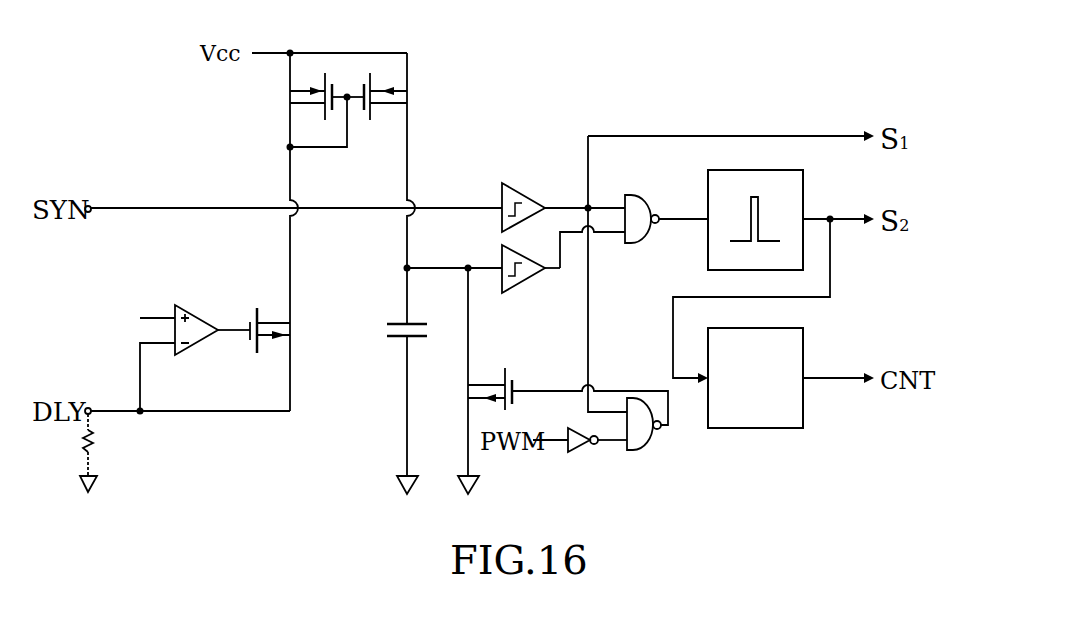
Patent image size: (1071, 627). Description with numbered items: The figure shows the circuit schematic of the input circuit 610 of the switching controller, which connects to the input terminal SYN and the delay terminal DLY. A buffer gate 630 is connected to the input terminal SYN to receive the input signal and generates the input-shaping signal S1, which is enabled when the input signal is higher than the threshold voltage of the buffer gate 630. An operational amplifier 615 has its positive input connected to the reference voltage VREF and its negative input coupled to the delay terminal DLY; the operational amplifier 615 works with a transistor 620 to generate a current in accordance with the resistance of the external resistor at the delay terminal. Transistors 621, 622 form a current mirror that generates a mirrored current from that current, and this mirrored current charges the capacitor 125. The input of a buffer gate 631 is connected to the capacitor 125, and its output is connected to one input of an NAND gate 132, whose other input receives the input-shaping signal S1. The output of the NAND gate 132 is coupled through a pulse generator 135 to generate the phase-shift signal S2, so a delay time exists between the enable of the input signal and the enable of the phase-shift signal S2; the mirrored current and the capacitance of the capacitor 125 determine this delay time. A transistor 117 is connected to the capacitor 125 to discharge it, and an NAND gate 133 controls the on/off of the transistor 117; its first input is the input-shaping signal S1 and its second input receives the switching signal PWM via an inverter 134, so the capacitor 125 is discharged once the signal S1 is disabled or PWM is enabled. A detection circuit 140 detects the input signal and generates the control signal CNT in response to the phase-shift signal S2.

The input circuit 610 is at (838, 49).
The transistor 621 is at (292, 93).
The transistor 622 is at (398, 93).
The operational amplifier 615 is at (201, 312).
The transistor 620 is at (250, 344).
The capacitor 125 is at (394, 340).
The transistor 117 is at (476, 392).
The buffer gate 630 is at (522, 193).
The buffer gate 631 is at (526, 282).
The NAND gate 132 is at (647, 197).
The pulse generator 135 is at (803, 198).
The NAND gate 133 is at (641, 451).
The inverter 134 is at (585, 451).
The detection circuit 140 is at (760, 429).